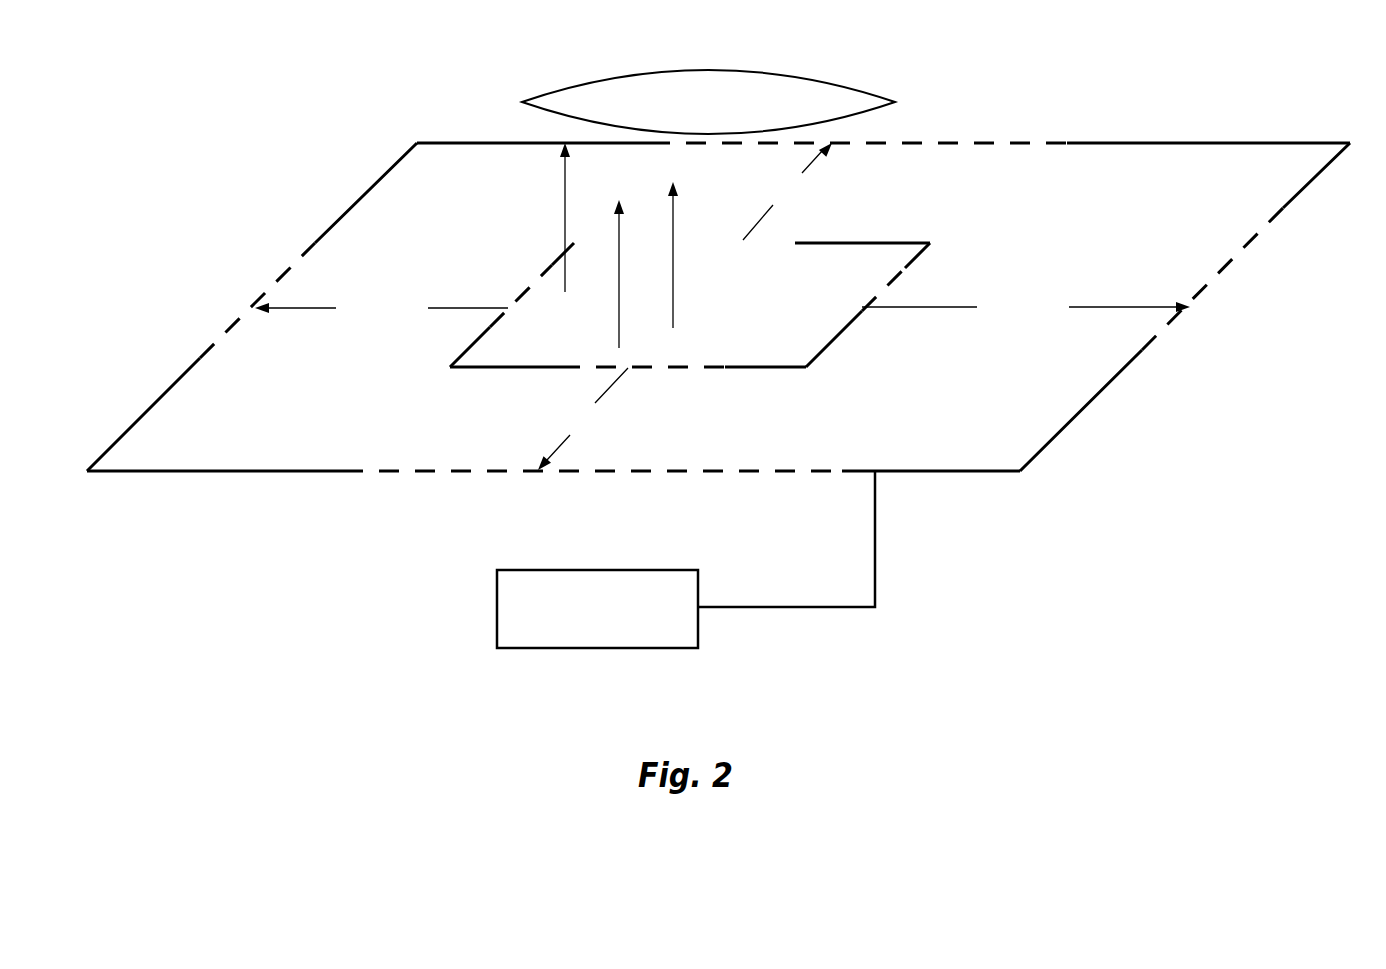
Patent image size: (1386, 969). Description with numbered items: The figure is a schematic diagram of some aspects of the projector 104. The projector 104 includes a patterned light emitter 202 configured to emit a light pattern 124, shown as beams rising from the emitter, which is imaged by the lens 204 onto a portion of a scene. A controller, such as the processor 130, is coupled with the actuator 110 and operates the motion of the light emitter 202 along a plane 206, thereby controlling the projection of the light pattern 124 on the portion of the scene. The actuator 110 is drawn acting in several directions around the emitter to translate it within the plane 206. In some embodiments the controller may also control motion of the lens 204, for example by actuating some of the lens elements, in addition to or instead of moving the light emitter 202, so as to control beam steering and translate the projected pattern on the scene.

The projector 104 is at (958, 72).
The actuator 110 is at (722, 306).
The light pattern 124 is at (565, 197).
The processor 130 is at (686, 560).
The patterned light emitter 202 is at (929, 246).
The lens 204 is at (608, 76).
The plane 206 is at (1010, 451).